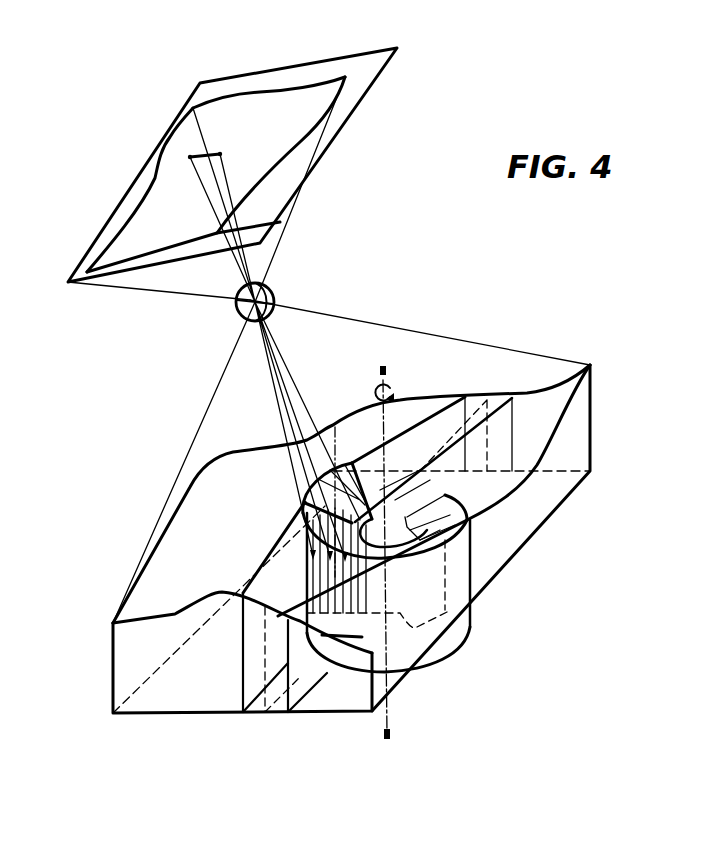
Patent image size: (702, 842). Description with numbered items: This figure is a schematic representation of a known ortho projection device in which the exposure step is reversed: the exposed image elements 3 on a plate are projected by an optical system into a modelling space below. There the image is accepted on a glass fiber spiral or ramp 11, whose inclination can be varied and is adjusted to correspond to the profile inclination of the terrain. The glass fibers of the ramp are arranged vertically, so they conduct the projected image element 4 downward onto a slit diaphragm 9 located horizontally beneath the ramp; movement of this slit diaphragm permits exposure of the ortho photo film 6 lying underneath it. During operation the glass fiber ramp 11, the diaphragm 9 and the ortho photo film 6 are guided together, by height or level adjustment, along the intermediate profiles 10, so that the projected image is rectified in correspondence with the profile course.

The exposed image elements 3 is at (208, 152).
The projected image element 4 is at (300, 510).
The ortho photo film 6 is at (342, 702).
The diaphragm 9 is at (297, 647).
The intermediate profiles 10 is at (280, 583).
The glass fiber spiral or ramp 11 is at (468, 518).